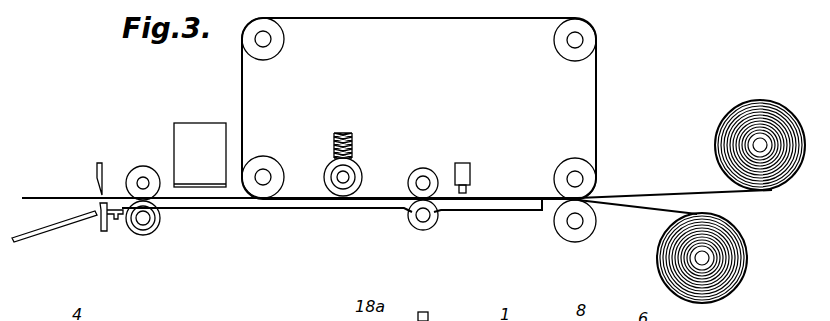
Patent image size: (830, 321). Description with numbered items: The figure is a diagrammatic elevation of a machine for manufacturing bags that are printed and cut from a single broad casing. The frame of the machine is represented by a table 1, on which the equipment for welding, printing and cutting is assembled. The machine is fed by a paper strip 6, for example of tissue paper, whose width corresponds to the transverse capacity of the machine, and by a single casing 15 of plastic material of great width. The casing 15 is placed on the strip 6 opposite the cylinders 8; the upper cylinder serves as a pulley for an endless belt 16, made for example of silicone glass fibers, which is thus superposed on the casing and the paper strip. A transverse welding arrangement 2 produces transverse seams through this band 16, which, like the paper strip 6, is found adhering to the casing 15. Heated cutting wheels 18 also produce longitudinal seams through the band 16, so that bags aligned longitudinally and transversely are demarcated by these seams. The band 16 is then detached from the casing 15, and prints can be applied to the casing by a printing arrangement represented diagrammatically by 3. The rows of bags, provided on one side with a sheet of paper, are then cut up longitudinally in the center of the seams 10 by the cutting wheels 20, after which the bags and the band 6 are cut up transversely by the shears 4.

The table 1 is at (296, 212).
The transverse welding arrangement 2 is at (460, 162).
The printing arrangement 3 is at (195, 124).
The transverse cutting arrangement 4 is at (96, 171).
The paper strip 6 is at (640, 210).
The cylinders 8 is at (578, 156).
The seams 10 is at (423, 166).
The casing 15 is at (685, 172).
The endless belt 16 is at (597, 96).
The heated cutting wheels 18 is at (366, 176).
The cutting wheels 20 is at (142, 166).